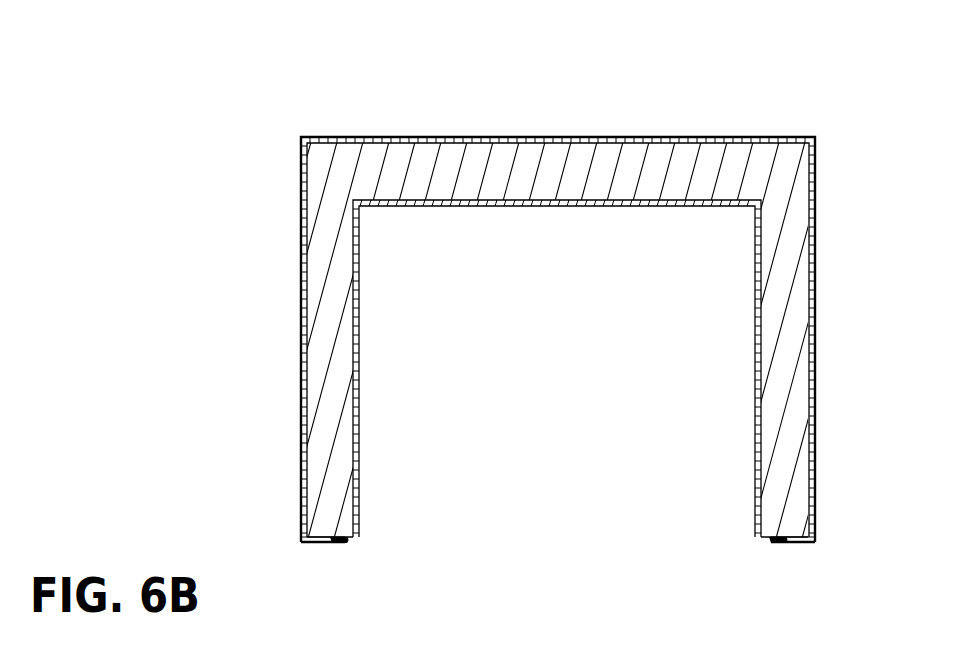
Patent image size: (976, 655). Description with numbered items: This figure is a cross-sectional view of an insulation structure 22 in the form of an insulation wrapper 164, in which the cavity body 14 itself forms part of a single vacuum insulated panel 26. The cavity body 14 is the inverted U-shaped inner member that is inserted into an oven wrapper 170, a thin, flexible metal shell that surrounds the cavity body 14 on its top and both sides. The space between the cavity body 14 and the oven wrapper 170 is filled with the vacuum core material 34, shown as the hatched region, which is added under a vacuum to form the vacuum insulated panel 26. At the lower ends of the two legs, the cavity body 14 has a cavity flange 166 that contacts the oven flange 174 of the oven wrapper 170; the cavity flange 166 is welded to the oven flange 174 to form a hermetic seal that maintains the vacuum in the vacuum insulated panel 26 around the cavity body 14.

The cavity body 14 is at (632, 198).
The insulation structure 22 is at (614, 271).
The vacuum insulated panel 26 is at (797, 340).
The vacuum core material 34 is at (556, 303).
The insulation wrapper 164 is at (814, 98).
The cavity flange 166 is at (343, 545).
The oven wrapper 170 is at (541, 137).
The oven flange 174 is at (320, 544).